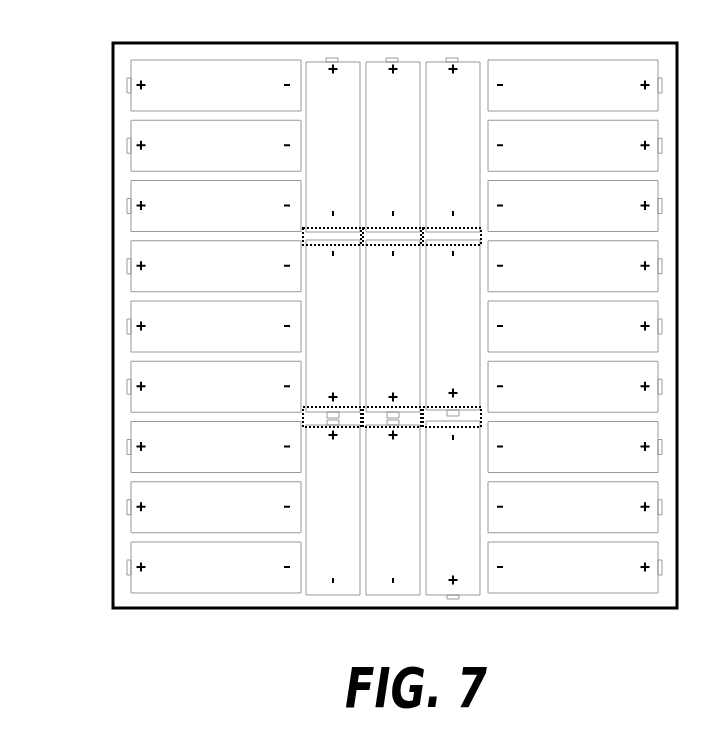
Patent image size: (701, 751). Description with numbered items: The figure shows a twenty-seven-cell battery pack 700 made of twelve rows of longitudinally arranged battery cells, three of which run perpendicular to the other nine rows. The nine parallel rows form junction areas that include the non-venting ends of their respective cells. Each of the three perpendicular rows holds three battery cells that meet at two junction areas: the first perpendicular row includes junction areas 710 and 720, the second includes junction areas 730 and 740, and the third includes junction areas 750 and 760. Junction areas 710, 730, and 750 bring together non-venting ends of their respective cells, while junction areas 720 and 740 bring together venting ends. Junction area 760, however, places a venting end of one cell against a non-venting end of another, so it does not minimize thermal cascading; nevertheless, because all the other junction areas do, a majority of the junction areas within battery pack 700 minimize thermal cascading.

The battery pack 700 is at (111, 68).
The junction area 710 is at (358, 228).
The junction area 720 is at (357, 407).
The junction area 730 is at (418, 228).
The junction area 740 is at (417, 407).
The junction area 750 is at (478, 228).
The junction area 760 is at (477, 407).